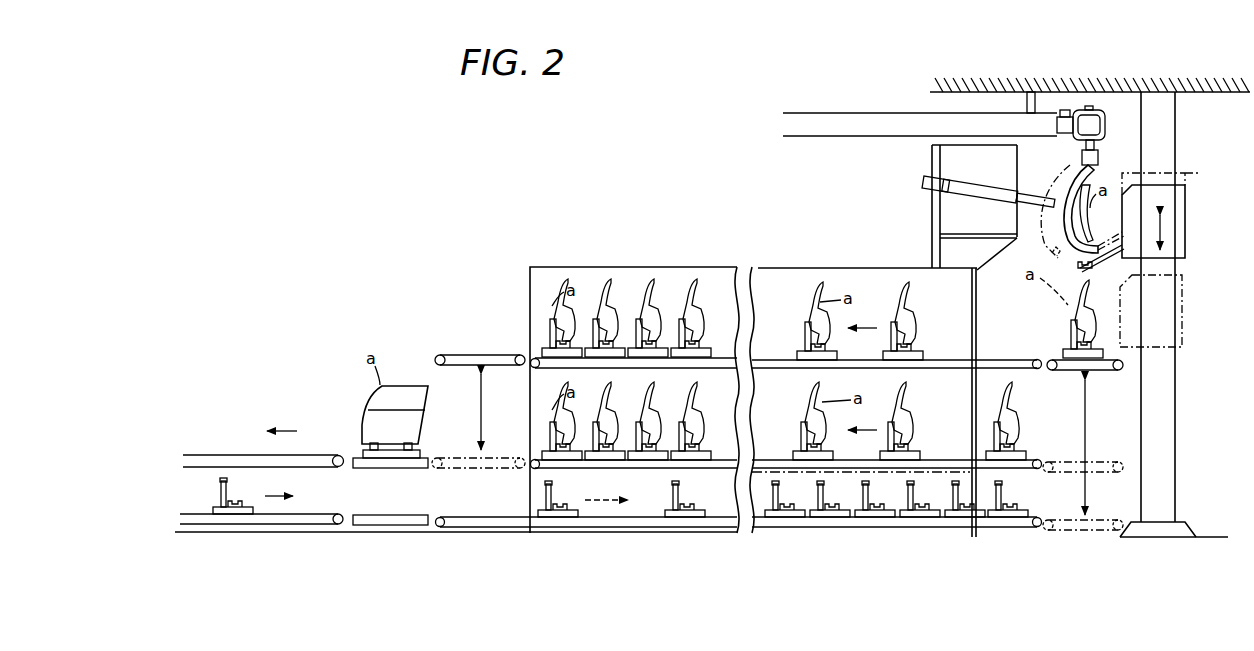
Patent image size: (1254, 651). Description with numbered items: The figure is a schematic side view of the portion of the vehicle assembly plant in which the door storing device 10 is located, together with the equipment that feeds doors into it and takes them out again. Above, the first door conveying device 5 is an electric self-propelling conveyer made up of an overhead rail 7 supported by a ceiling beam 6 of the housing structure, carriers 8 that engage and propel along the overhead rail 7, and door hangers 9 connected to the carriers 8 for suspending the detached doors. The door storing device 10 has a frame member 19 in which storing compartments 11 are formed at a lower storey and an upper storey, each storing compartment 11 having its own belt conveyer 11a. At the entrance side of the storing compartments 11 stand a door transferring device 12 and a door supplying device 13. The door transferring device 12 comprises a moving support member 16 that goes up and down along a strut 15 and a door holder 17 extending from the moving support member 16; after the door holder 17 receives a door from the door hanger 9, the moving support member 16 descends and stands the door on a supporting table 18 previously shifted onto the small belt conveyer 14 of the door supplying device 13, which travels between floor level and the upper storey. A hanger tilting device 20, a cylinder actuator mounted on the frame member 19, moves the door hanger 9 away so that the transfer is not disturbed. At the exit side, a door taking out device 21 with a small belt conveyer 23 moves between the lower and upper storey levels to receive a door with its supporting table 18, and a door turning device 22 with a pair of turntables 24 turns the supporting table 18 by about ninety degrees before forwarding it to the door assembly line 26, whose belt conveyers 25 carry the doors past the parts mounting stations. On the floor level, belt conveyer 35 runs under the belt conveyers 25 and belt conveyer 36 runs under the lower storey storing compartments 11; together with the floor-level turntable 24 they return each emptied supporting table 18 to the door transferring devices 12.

The first door conveying device 5 is at (1058, 100).
The ceiling beam 6 is at (1200, 93).
The overhead rail 7 is at (867, 112).
The carrier 8 is at (1106, 118).
The door hanger 9 is at (1062, 186).
The door storing device 10 is at (658, 260).
The storing compartment 11 is at (940, 385).
The belt conveyer 11a is at (930, 362).
The door transferring device 12 is at (1188, 268).
The door supplying device 13 is at (1128, 385).
The small belt conveyer 14 is at (1075, 373).
The strut 15 is at (1178, 148).
The moving support member 16 is at (1186, 198).
The door holder 17 is at (1101, 274).
The supporting table 18 is at (548, 336).
The frame member 19 is at (798, 267).
The hanger tilting device 20 is at (922, 187).
The door taking out device 21 is at (440, 356).
The door turning device 22 is at (350, 447).
The small belt conveyer 23 is at (462, 352).
The turntable 24 is at (420, 466).
The belt conveyer 25 is at (232, 455).
The door assembly line 26 is at (196, 449).
The belt conveyer 35 is at (274, 526).
The belt conveyer 36 is at (637, 532).